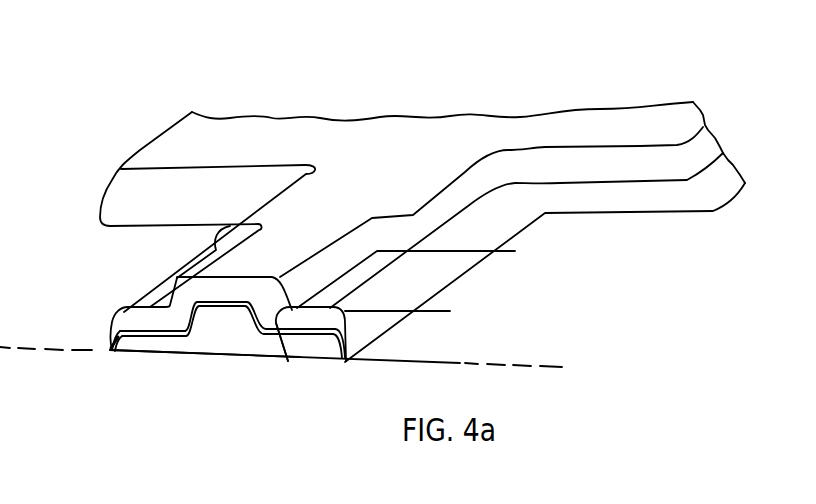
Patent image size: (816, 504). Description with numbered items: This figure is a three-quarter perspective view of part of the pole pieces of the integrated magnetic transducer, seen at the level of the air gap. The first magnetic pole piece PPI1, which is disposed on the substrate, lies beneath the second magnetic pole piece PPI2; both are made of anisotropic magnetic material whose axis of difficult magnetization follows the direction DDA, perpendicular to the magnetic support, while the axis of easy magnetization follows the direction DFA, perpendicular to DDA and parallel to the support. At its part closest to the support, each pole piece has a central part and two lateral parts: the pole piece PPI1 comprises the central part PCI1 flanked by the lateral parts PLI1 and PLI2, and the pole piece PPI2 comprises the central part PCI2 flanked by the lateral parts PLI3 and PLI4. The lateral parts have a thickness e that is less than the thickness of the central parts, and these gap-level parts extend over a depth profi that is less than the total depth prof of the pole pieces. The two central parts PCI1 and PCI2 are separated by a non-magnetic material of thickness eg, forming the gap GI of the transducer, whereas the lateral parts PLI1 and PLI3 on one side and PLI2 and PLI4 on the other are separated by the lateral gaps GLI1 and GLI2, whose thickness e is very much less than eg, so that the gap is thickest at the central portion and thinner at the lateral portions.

The central part of the second pole piece PCI2 is at (244, 268).
The lateral part of the second pole piece PLI3 is at (178, 281).
The lateral part of the first pole piece PLI1 is at (110, 346).
The thickness of the lateral parts e is at (147, 345).
The gap of the transducer GI is at (216, 303).
The gap thickness eg is at (233, 290).
The first lateral gap GLI1 is at (133, 340).
The central part of the first pole piece PCI1 is at (187, 342).
The lateral part of the second pole piece PLI4 is at (283, 340).
The second lateral gap GLI2 is at (311, 347).
The lateral part of the first pole piece PLI2 is at (333, 350).
The second magnetic pole piece PPI2 is at (510, 232).
The first magnetic pole piece PPI1 is at (545, 272).
The depth of the gap-level parts profi is at (503, 252).
The total depth prof is at (425, 360).
The direction of difficult magnetization DDA is at (458, 108).
The direction of easy magnetization DFA is at (508, 92).